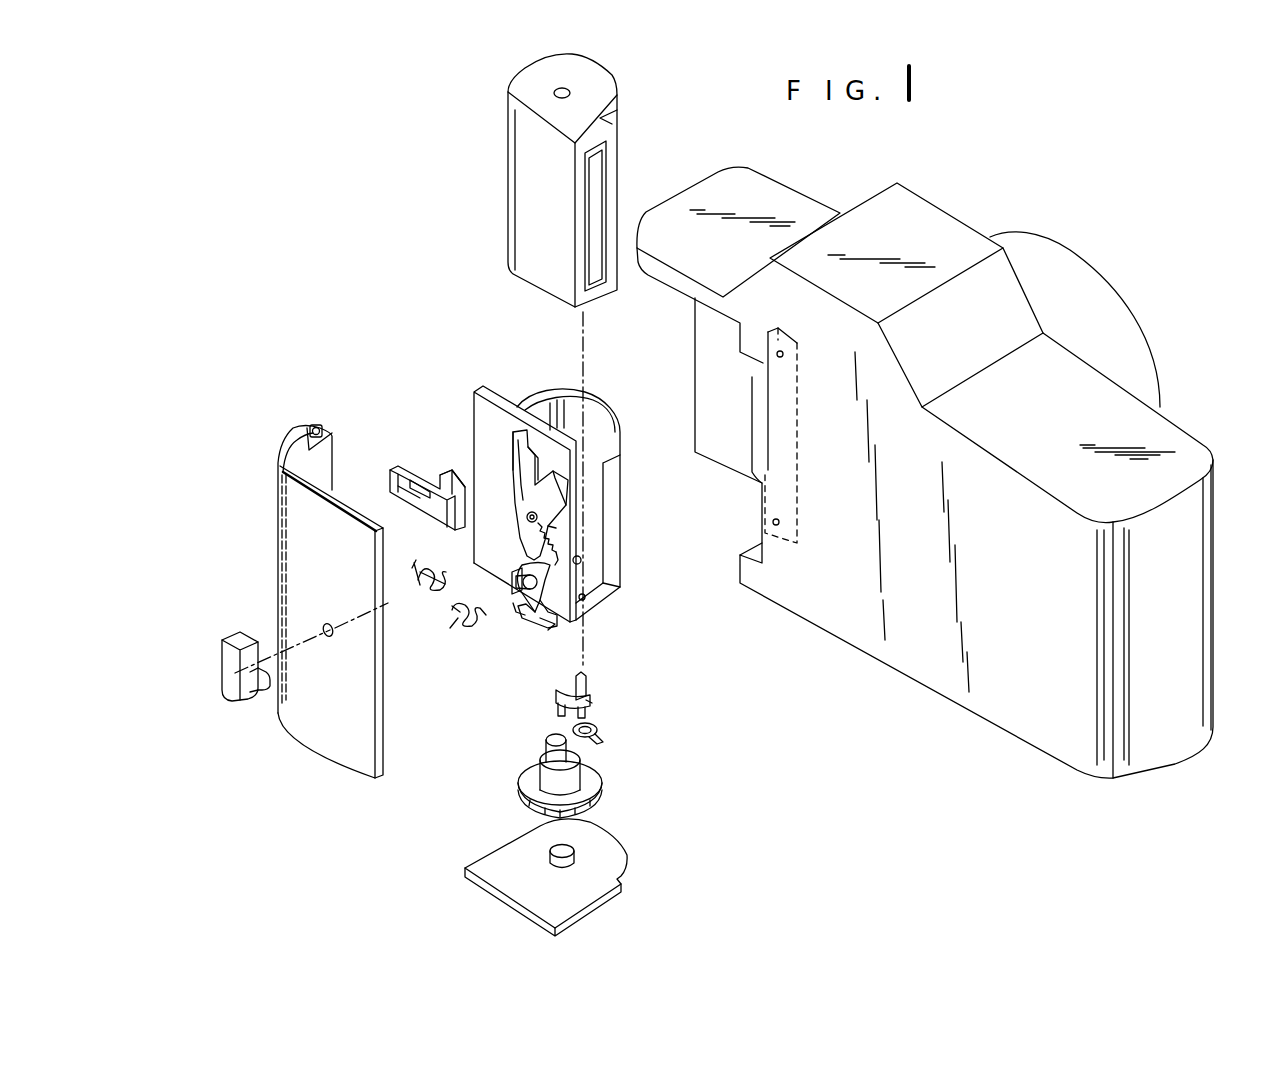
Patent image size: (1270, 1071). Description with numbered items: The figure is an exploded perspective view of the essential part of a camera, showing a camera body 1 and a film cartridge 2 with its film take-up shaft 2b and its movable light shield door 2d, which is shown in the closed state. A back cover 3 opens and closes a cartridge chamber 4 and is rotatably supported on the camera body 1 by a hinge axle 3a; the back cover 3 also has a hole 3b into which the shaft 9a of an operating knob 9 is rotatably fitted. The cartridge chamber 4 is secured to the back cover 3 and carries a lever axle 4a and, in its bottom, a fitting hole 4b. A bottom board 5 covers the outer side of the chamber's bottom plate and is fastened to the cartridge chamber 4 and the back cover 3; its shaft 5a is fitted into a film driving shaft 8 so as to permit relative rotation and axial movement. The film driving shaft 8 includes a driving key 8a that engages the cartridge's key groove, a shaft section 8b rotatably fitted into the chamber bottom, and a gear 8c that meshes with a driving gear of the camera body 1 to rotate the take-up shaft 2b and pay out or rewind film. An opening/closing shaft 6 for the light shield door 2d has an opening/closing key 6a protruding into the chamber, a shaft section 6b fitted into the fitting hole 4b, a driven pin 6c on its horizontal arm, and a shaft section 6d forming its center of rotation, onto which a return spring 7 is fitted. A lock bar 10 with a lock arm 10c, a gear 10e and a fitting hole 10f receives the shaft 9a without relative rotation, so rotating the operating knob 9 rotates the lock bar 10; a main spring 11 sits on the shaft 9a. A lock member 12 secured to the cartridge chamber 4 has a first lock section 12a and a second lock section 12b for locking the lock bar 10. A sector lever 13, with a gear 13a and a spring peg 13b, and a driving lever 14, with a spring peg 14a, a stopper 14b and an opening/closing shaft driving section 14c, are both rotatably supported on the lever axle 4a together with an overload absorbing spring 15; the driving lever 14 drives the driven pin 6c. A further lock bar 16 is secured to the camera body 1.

The camera body 1 is at (937, 212).
The film cartridge 2 is at (554, 180).
The film take-up shaft 2b is at (560, 98).
The movable light shield door 2d is at (600, 167).
The back cover 3 is at (305, 573).
The hinge axle 3a is at (316, 426).
The hole 3b is at (333, 640).
The cartridge chamber 4 is at (554, 474).
The lever axle 4a is at (515, 580).
The fitting hole 4b is at (590, 597).
The bottom board 5 is at (581, 877).
The shaft 5a is at (577, 853).
The opening/closing shaft 6 is at (609, 687).
The opening/closing key 6a is at (587, 683).
The shaft section 6b is at (590, 694).
The driven pin 6c is at (555, 705).
The shaft section 6d is at (588, 709).
The return spring 7 is at (600, 738).
The film driving shaft 8 is at (598, 786).
The driving key 8a is at (578, 750).
The shaft section 8b is at (590, 773).
The gear 8c is at (587, 786).
The operating knob 9 is at (229, 699).
The shaft 9a is at (260, 695).
The lock bar 10 is at (567, 447).
The lock arm 10c is at (560, 478).
The gear 10e is at (545, 528).
The fitting hole 10f is at (530, 510).
The main spring 11 is at (420, 585).
The lock member 12 is at (411, 459).
The first lock section 12a is at (455, 518).
The second lock section 12b is at (444, 472).
The sector lever 13 is at (555, 578).
The gear 13a is at (552, 535).
The spring peg 13b is at (567, 597).
The driving lever 14 is at (553, 630).
The spring peg 14a is at (514, 606).
The stopper 14b is at (558, 624).
The opening/closing shaft driving section 14c is at (516, 612).
The overload absorbing spring 15 is at (458, 628).
The lock bar 16 is at (755, 470).